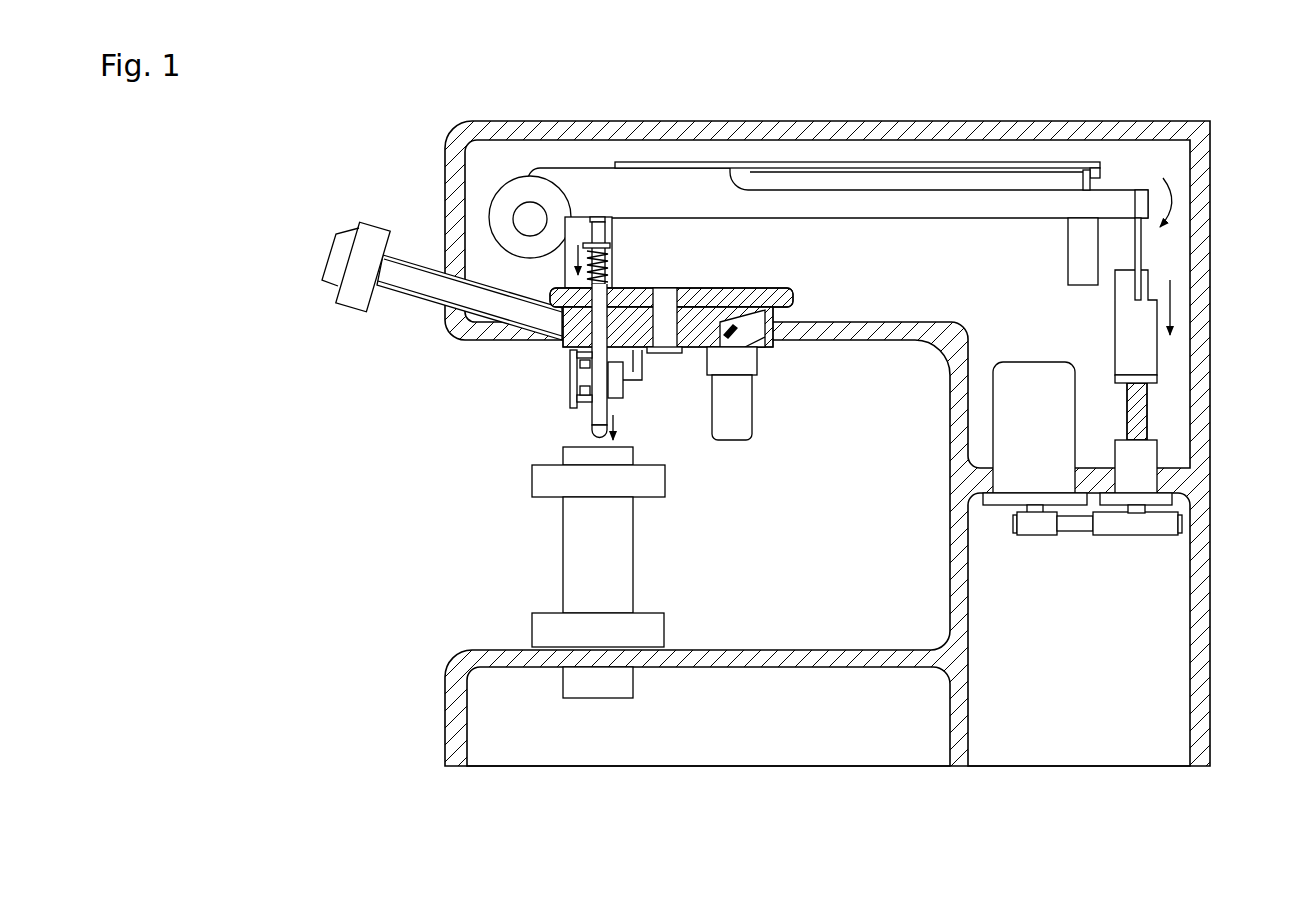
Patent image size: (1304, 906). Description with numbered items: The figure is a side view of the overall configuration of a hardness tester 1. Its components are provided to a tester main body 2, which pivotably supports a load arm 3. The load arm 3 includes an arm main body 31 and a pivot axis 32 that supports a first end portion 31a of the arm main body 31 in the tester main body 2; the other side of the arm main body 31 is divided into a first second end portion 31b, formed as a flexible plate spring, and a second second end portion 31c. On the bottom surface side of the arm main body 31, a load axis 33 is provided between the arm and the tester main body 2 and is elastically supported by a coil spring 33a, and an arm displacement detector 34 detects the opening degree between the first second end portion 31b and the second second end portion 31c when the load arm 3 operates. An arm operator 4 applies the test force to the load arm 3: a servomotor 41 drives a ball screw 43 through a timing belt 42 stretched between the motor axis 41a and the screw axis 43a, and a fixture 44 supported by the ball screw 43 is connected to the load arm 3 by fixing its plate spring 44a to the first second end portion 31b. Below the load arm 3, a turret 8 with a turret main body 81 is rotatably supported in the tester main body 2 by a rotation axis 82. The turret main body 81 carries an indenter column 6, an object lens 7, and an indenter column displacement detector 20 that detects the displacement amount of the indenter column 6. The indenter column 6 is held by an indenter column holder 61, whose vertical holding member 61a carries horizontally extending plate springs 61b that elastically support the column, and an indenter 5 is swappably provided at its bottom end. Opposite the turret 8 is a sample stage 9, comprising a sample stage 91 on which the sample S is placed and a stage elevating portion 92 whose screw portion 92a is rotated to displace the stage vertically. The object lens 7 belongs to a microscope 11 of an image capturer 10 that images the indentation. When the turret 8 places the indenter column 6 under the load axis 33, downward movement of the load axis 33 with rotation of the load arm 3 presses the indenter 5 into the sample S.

The hardness tester 1 is at (827, 408).
The tester main body 2 is at (486, 128).
The load arm 3 is at (857, 128).
The arm operator 4 is at (1083, 385).
The indenter 5 is at (593, 433).
The indenter column 6 is at (562, 380).
The object lens 7 is at (742, 408).
The turret 8 is at (671, 334).
The sample stage 9 is at (603, 563).
The image capturer 10 is at (438, 299).
The microscope 11 is at (352, 297).
The indenter column displacement detector 20 is at (627, 381).
The arm main body 31 is at (774, 162).
The first end portion 31a is at (497, 218).
The first second end portion 31b is at (1117, 208).
The second second end portion 31c is at (1008, 163).
The pivot axis 32 is at (530, 217).
The load axis 33 is at (624, 252).
The coil spring 33a is at (610, 268).
The arm displacement detector 34 is at (1078, 247).
The servomotor 41 is at (992, 428).
The motor axis 41a is at (1020, 511).
The timing belt 42 is at (1072, 525).
The ball screw 43 is at (1173, 482).
The screw axis 43a is at (1128, 510).
The fixture 44 is at (1191, 280).
The plate spring 44a is at (1140, 244).
The indenter column holder 61 is at (533, 393).
The vertical holding member 61a is at (575, 372).
The plate springs 61b is at (582, 398).
The turret main body 81 is at (702, 335).
The rotation axis 82 is at (666, 296).
The sample stage 91 is at (653, 484).
The stage elevating portion 92 is at (625, 597).
The screw portion 92a is at (620, 553).
The sample S is at (622, 456).